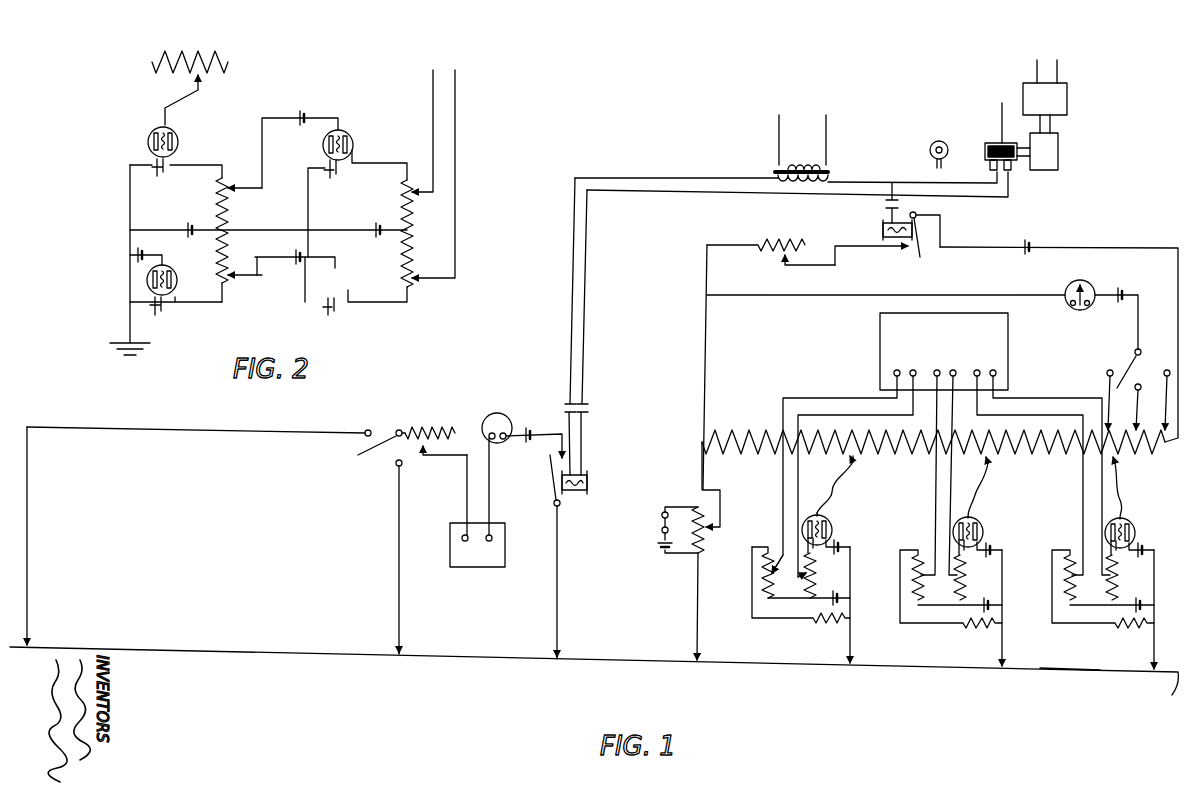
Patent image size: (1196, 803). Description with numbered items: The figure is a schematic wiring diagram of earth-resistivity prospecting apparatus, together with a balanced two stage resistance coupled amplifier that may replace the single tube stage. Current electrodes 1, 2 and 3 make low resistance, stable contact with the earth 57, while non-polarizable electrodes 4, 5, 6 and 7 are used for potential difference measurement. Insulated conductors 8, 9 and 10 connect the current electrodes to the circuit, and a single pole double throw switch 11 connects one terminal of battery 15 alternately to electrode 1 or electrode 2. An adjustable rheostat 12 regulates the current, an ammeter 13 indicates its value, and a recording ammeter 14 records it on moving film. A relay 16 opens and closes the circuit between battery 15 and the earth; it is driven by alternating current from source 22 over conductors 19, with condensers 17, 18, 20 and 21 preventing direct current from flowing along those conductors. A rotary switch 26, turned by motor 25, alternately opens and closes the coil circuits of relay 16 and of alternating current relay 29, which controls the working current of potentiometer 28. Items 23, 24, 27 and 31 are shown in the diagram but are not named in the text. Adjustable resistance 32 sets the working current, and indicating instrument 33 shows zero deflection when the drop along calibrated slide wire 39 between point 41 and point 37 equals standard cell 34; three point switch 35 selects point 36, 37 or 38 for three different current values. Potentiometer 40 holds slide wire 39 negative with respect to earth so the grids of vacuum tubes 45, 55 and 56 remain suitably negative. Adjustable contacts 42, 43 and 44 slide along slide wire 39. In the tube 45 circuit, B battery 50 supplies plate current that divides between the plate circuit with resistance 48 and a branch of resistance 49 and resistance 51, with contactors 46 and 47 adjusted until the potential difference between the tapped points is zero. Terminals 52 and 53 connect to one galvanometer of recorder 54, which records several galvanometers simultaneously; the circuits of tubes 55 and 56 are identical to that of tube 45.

In FIG. 1, the electrode 1 is at (30, 645).
In FIG. 1, the electrode 2 is at (400, 652).
In FIG. 1, the electrode 3 is at (560, 656).
In FIG. 1, the electrode 4 is at (700, 660).
In FIG. 1, the electrode 5 is at (853, 664).
In FIG. 2, the electrode 5 is at (108, 260).
In FIG. 1, the electrode 6 is at (1005, 667).
In FIG. 1, the electrode 7 is at (1157, 670).
In FIG. 1, the insulated conductor 8 is at (392, 560).
In FIG. 1, the insulated conductor 9 is at (560, 565).
In FIG. 1, the insulated conductor 10 is at (270, 427).
In FIG. 1, the single pole double throw switch 11 is at (385, 430).
In FIG. 1, the adjustable rheostat 12 is at (428, 425).
In FIG. 1, the ammeter 13 is at (500, 413).
In FIG. 1, the recording ammeter 14 is at (472, 568).
In FIG. 1, the battery 15 is at (530, 440).
In FIG. 1, the relay 16 is at (584, 490).
In FIG. 1, the condenser 17 is at (562, 408).
In FIG. 1, the condenser 18 is at (588, 408).
In FIG. 1, the conductors 19 is at (575, 287).
In FIG. 1, the condenser 20 is at (885, 205).
In FIG. 1, the condenser 21 is at (922, 213).
In FIG. 1, the source of alternating current 22 is at (768, 170).
In FIG. 1, the terminal 23 is at (988, 168).
In FIG. 1, the terminal 24 is at (1012, 172).
In FIG. 1, the motor 25 is at (1070, 95).
In FIG. 1, the rotary switch 26 is at (1005, 138).
In FIG. 1, the indicator 27 is at (1060, 148).
In FIG. 1, the potentiometer 28 is at (700, 310).
In FIG. 1, the alternating current relay 29 is at (880, 230).
In FIG. 1, the battery 31 is at (1035, 245).
In FIG. 1, the adjustable resistance 32 is at (784, 240).
In FIG. 1, the indicating instrument 33 is at (1066, 285).
In FIG. 1, the standard cell 34 is at (1130, 295).
In FIG. 1, the three point switch 35 is at (1140, 370).
In FIG. 1, the point on slide wire 36 is at (1118, 410).
In FIG. 1, the point on slide wire 37 is at (1143, 410).
In FIG. 1, the point on slide wire 38 is at (1160, 440).
In FIG. 1, the calibrated slide wire 39 is at (737, 425).
In FIG. 2, the calibrated slide wire 39 is at (178, 48).
In FIG. 1, the potentiometer 40 is at (675, 503).
In FIG. 1, the point on slide wire 41 is at (706, 448).
In FIG. 1, the adjustable contact point 42 is at (858, 460).
In FIG. 2, the adjustable contact point 42 is at (206, 78).
In FIG. 1, the adjustable contact point 43 is at (993, 462).
In FIG. 1, the adjustable contact point 44 is at (1122, 466).
In FIG. 1, the vacuum tube 45 is at (832, 520).
In FIG. 2, the vacuum tube 45 is at (172, 128).
In FIG. 1, the contactor 46 is at (800, 580).
In FIG. 2, the contactor 46 is at (228, 280).
In FIG. 1, the contactor 47 is at (786, 562).
In FIG. 2, the contactor 47 is at (232, 184).
In FIG. 1, the resistance 48 is at (817, 575).
In FIG. 2, the resistance 48 is at (228, 212).
In FIG. 1, the resistance 49 is at (762, 577).
In FIG. 2, the resistance 49 is at (228, 250).
In FIG. 1, the B battery 50 is at (835, 592).
In FIG. 2, the B battery 50 is at (186, 226).
In FIG. 1, the resistance 51 is at (830, 620).
In FIG. 1, the terminal 52 is at (897, 368).
In FIG. 2, the terminal 52 is at (427, 28).
In FIG. 1, the terminal 53 is at (913, 368).
In FIG. 2, the terminal 53 is at (458, 28).
In FIG. 1, the recording galvanometer arrangement 54 is at (1010, 352).
In FIG. 1, the vacuum tube 55 is at (983, 522).
In FIG. 1, the vacuum tube 56 is at (1135, 524).
In FIG. 1, the earth 57 is at (1066, 668).